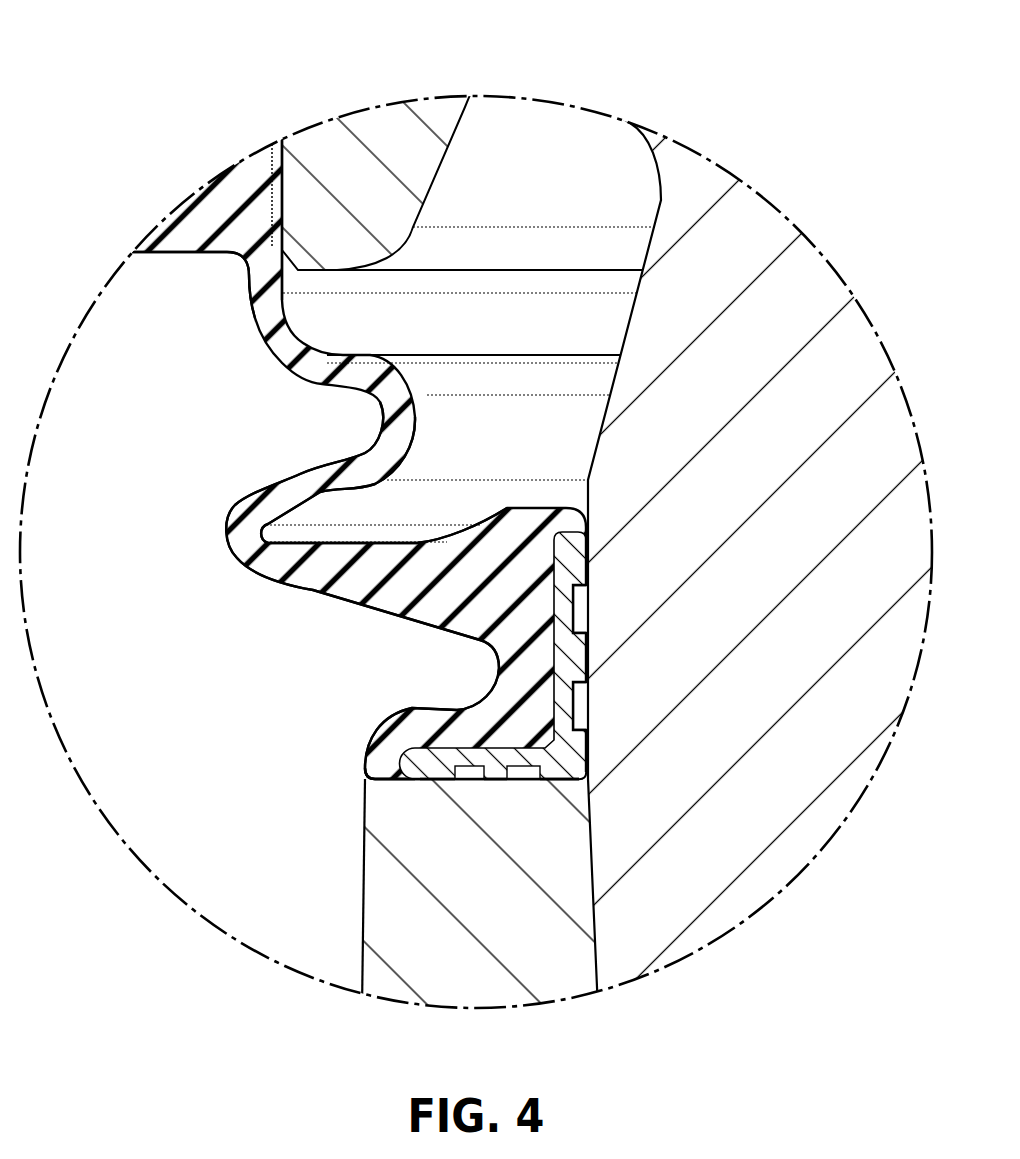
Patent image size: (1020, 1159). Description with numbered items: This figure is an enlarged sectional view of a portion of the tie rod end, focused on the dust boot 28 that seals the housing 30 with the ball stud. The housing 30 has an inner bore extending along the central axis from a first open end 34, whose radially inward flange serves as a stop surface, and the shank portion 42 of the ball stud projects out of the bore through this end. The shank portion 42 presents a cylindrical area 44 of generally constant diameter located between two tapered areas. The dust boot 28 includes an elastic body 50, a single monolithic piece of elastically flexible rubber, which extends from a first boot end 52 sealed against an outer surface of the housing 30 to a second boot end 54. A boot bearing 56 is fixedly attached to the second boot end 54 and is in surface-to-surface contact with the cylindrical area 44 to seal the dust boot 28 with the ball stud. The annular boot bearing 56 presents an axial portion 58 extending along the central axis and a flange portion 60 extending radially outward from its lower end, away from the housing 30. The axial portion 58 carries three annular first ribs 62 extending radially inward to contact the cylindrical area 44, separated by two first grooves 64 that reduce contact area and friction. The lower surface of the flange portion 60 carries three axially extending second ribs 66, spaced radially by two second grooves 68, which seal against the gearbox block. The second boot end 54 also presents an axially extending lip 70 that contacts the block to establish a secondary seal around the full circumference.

The dust boot 28 is at (254, 602).
The housing 30 is at (374, 97).
The first open end 34 is at (340, 250).
The shank portion 42 is at (847, 357).
The cylindrical area 44 is at (563, 697).
The elastic body 50 is at (303, 482).
The first boot end 52 is at (230, 200).
The second boot end 54 is at (515, 645).
The boot bearing 56 is at (420, 792).
The axial portion 58 is at (513, 642).
The flange portion 60 is at (468, 745).
The first ribs 62 is at (579, 562).
The first grooves 64 is at (581, 610).
The second ribs 66 is at (437, 782).
The second grooves 68 is at (468, 785).
The lip 70 is at (372, 781).